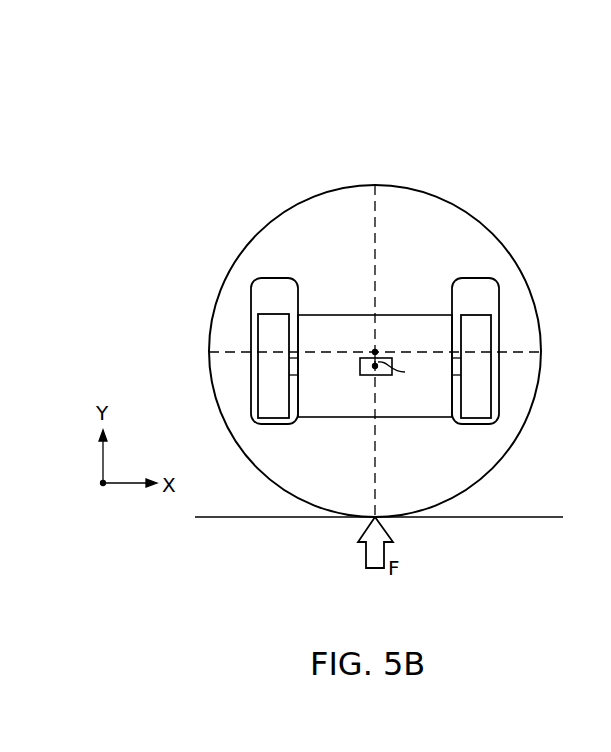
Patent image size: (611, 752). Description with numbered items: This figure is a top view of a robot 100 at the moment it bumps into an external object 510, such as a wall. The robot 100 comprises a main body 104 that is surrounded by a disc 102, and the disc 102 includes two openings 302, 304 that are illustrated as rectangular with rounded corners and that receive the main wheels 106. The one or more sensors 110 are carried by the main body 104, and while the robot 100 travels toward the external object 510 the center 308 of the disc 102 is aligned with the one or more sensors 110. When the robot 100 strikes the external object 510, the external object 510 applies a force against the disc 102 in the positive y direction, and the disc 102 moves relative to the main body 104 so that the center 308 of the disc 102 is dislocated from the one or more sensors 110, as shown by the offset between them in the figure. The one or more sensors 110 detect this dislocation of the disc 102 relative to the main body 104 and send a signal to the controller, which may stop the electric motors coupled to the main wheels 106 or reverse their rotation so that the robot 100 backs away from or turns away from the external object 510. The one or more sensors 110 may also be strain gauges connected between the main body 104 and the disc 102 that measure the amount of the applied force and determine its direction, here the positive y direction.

The robot 100 is at (361, 279).
The disc 102 is at (425, 190).
The main body 104 is at (405, 315).
The main wheels 106 is at (258, 325).
The one or more sensors 110 is at (362, 376).
The opening 302 is at (265, 278).
The opening 304 is at (486, 278).
The center of the disc 308 is at (375, 352).
The external object 510 is at (453, 518).